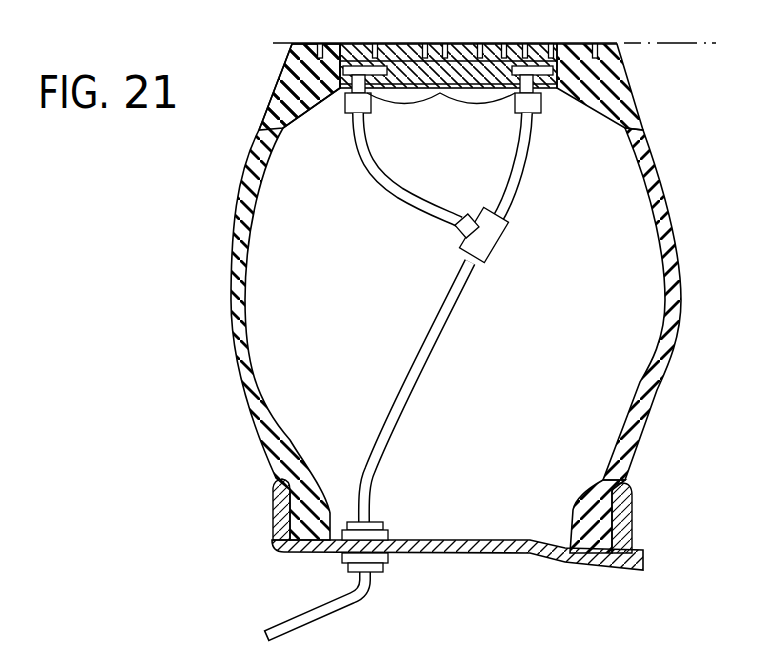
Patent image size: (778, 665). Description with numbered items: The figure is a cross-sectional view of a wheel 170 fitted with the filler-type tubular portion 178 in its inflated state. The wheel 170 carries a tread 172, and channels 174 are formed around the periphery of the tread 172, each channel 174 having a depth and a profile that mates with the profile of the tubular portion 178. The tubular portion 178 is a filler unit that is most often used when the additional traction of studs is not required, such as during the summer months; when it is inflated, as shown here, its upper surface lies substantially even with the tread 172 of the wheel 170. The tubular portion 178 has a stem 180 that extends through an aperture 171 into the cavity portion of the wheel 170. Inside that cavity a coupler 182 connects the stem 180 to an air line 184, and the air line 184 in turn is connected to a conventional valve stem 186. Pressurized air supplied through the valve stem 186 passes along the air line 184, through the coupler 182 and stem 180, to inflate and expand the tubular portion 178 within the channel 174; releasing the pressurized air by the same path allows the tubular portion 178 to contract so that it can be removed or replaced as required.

The wheel 170 is at (236, 213).
The aperture 171 is at (336, 88).
The tread 172 is at (462, 43).
The channel 174 is at (340, 43).
The tubular portion 178 is at (365, 29).
The stem 180 is at (470, 97).
The coupler 182 is at (347, 117).
The air line 184 is at (392, 185).
The valve stem 186 is at (300, 613).